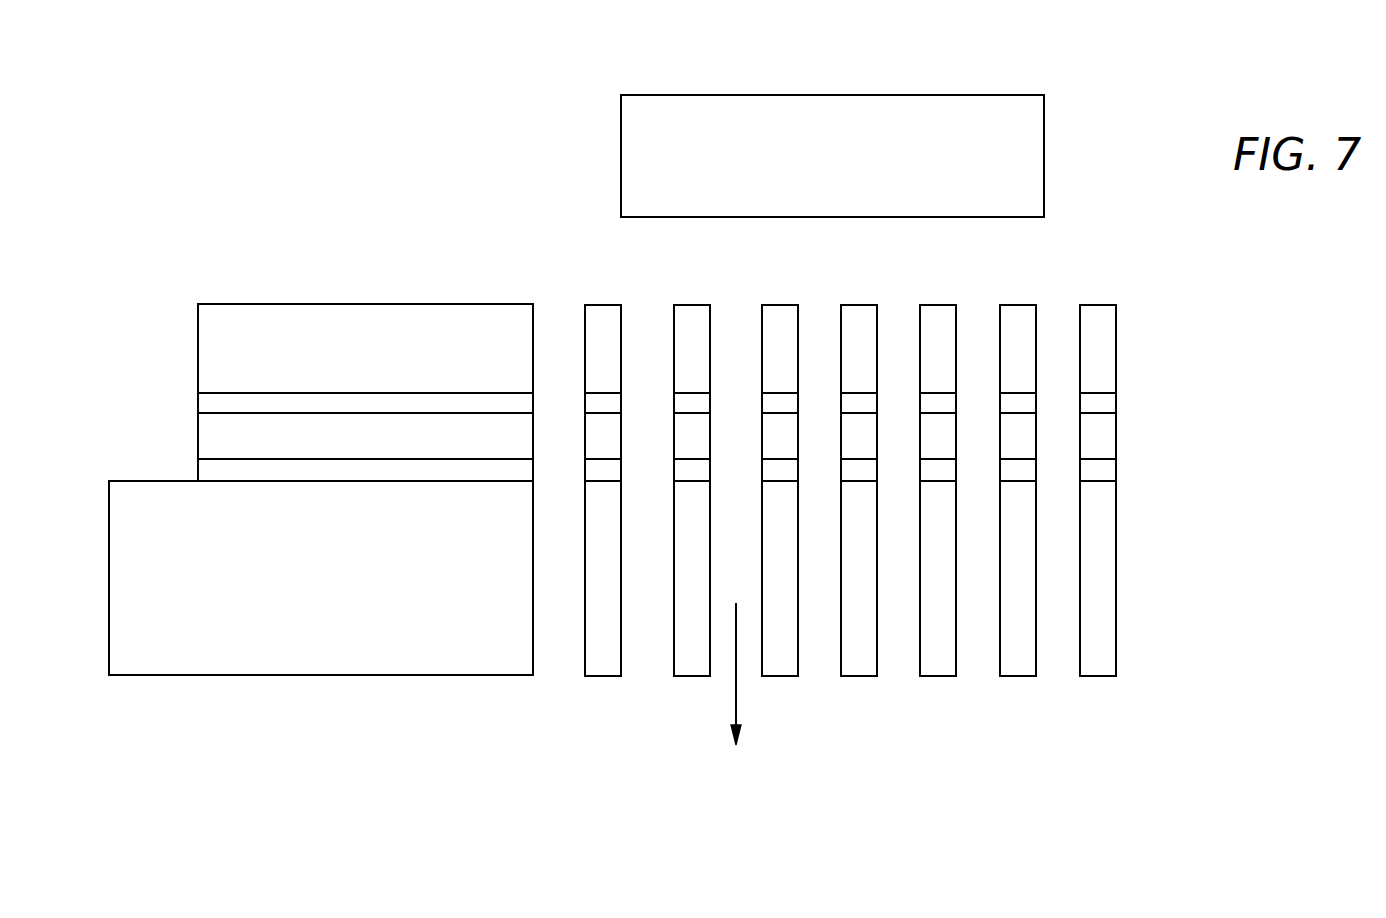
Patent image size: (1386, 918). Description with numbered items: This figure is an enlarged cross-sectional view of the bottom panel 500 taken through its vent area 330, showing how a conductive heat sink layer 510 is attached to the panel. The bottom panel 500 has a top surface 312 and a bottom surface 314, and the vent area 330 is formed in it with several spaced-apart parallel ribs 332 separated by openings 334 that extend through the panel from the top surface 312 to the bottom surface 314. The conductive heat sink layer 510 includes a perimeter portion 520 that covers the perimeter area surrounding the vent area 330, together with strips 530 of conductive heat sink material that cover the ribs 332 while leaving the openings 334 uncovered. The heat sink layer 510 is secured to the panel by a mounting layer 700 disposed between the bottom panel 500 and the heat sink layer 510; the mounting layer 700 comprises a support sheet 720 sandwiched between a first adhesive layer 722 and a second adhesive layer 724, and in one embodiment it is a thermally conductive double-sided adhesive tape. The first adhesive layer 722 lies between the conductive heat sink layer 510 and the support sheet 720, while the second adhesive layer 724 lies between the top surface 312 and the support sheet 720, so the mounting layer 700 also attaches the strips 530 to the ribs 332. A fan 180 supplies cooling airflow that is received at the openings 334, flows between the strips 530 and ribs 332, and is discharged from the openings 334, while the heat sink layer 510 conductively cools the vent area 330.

The fan 180 is at (878, 167).
The bottom panel 500 is at (305, 148).
The top surface 312 is at (145, 480).
The bottom surface 314 is at (272, 675).
The vent area 330 is at (427, 605).
The conductive heat sink layer 510 is at (323, 303).
The perimeter portion 520 is at (370, 355).
The strips 530 is at (1115, 332).
The ribs 332 is at (1097, 675).
The openings 334 is at (973, 623).
The mounting layer 700 is at (1244, 384).
The first adhesive layer 722 is at (1115, 405).
The support sheet 720 is at (1115, 437).
The second adhesive layer 724 is at (1115, 473).